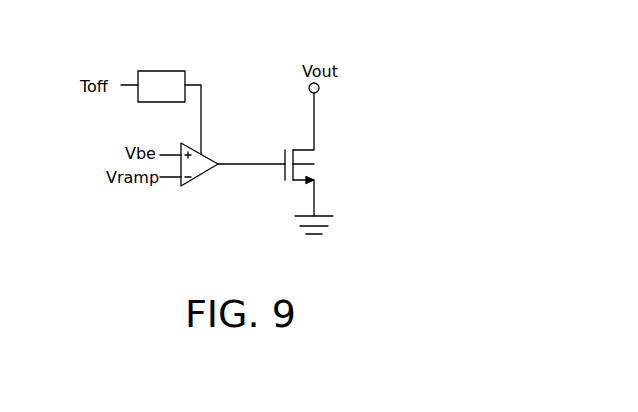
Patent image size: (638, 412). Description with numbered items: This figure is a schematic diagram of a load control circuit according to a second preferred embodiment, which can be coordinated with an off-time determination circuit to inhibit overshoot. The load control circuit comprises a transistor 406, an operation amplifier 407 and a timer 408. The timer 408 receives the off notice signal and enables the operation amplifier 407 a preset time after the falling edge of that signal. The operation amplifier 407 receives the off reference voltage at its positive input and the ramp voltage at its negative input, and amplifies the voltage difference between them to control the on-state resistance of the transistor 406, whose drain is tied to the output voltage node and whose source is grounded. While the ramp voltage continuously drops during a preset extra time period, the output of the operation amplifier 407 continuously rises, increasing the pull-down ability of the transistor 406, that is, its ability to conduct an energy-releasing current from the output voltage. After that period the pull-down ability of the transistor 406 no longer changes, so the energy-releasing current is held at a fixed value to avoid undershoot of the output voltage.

The transistor 406 is at (313, 155).
The operation amplifier 407 is at (203, 179).
The timer 408 is at (177, 96).